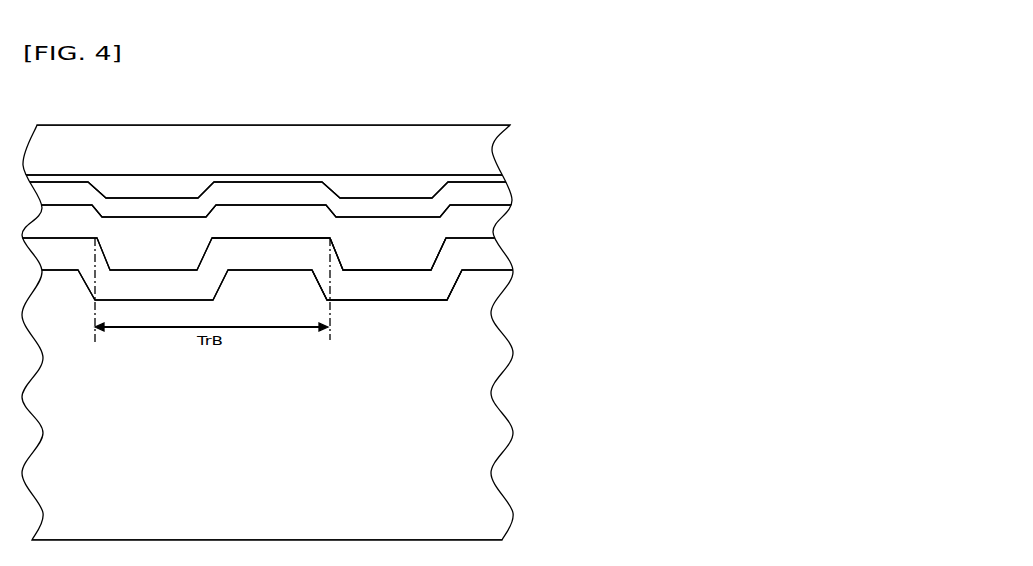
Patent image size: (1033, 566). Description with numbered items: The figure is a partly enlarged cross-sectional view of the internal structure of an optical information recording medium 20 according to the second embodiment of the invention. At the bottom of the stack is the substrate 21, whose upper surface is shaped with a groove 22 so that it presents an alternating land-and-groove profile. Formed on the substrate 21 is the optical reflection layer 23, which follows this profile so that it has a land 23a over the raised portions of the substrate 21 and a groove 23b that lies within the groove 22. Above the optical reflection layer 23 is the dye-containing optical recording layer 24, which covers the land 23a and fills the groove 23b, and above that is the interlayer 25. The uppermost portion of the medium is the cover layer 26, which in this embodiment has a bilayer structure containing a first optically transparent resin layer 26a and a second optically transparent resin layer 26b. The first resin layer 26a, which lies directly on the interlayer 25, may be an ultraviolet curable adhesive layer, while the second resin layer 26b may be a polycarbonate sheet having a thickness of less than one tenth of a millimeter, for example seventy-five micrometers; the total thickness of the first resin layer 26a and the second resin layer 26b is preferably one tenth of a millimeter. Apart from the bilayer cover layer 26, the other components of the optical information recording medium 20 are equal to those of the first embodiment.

The optical information recording medium 20 is at (465, 315).
The substrate 21 is at (343, 405).
The groove 22 is at (357, 302).
The optical reflection layer 23 is at (406, 279).
The land 23a is at (300, 238).
The groove 23b is at (412, 267).
The dye-containing optical recording layer 24 is at (483, 220).
The interlayer 25 is at (493, 190).
The cover layer 26 is at (465, 161).
The first resin layer 26a is at (483, 173).
The second resin layer 26b is at (483, 152).